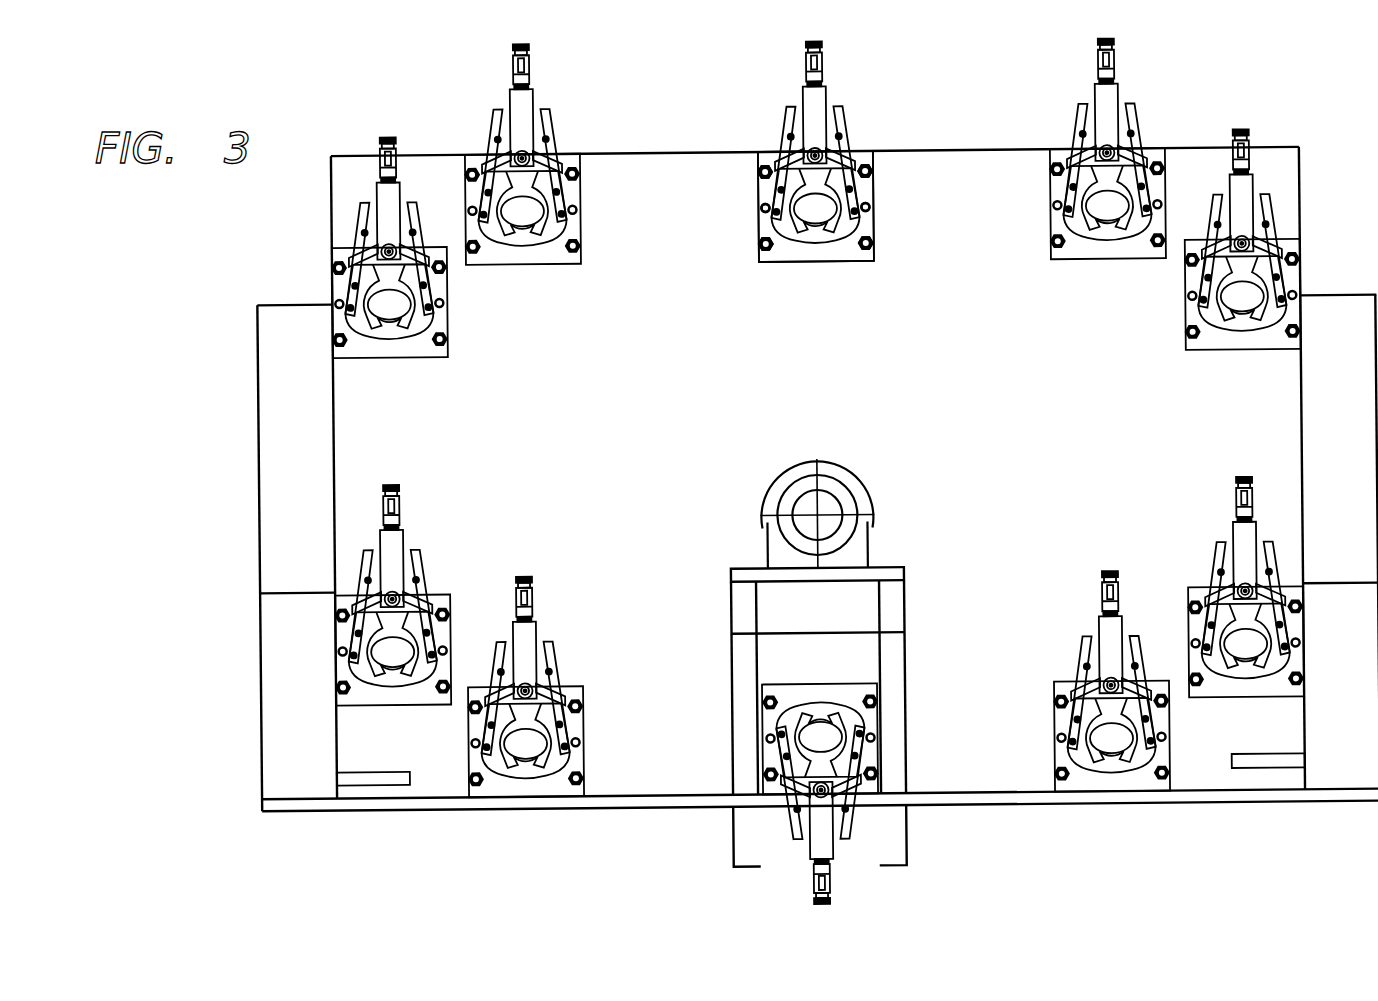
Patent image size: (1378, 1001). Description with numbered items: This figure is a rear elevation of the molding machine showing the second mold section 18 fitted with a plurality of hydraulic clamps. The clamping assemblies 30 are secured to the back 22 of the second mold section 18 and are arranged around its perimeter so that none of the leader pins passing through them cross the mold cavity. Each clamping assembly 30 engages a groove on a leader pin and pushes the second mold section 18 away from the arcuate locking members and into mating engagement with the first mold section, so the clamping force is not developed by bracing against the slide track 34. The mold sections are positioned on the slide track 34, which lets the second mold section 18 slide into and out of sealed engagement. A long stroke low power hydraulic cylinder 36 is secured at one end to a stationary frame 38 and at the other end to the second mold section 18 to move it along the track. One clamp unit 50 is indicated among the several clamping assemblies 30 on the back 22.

The second mold section 18 is at (985, 146).
The back 22 is at (650, 190).
The clamping assemblies 30 is at (890, 218).
The slide track 34 is at (910, 838).
The long stroke low power hydraulic cylinder 36 is at (835, 462).
The stationary frame 38 is at (888, 695).
The clamp unit 50 is at (853, 108).